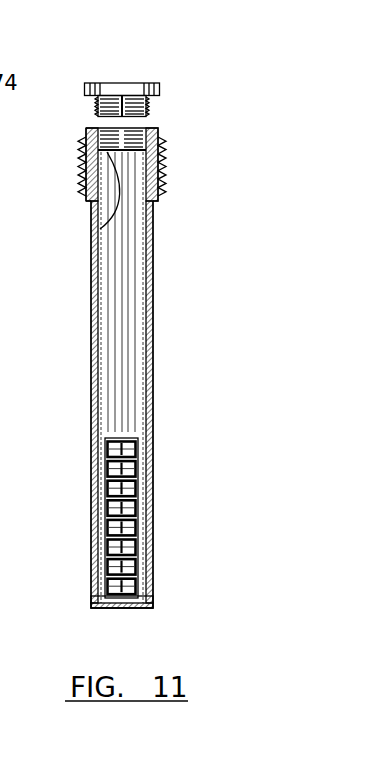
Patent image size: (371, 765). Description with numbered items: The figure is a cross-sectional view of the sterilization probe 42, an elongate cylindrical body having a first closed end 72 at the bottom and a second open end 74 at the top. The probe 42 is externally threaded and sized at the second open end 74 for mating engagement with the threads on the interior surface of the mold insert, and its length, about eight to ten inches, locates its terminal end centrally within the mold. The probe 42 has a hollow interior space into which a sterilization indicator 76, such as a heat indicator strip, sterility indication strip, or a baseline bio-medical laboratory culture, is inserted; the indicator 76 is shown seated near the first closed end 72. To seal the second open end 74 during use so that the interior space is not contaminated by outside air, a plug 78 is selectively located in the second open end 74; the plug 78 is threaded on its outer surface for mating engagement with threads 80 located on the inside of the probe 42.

The plug 78 is at (119, 92).
The second open end 74 is at (196, 123).
The sterilization probe 42 is at (165, 346).
The threads 80 is at (100, 229).
The sterilization indicator 76 is at (132, 523).
The first closed end 72 is at (170, 605).